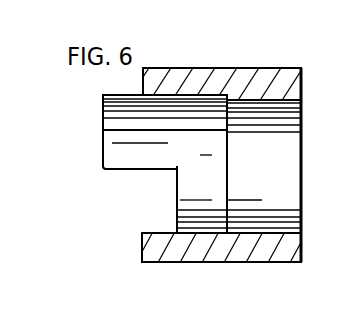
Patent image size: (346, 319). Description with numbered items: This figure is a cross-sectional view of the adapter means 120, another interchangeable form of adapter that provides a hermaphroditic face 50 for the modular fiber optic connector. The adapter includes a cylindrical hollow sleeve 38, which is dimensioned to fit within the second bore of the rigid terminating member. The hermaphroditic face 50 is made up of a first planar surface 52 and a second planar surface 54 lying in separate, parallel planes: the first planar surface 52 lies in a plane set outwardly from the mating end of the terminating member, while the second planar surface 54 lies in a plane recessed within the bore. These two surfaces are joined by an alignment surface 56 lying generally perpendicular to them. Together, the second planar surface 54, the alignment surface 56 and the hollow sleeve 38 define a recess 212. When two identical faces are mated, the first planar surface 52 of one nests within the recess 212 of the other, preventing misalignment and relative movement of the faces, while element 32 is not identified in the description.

The hollow sleeve 38 is at (216, 248).
The hermaphroditic face 50 is at (100, 153).
The first planar surface 52 is at (103, 130).
The second planar surface 54 is at (172, 196).
The alignment surface 56 is at (160, 174).
The adapter means 120 is at (118, 175).
The recess 212 is at (143, 218).
The body 32 is at (131, 314).